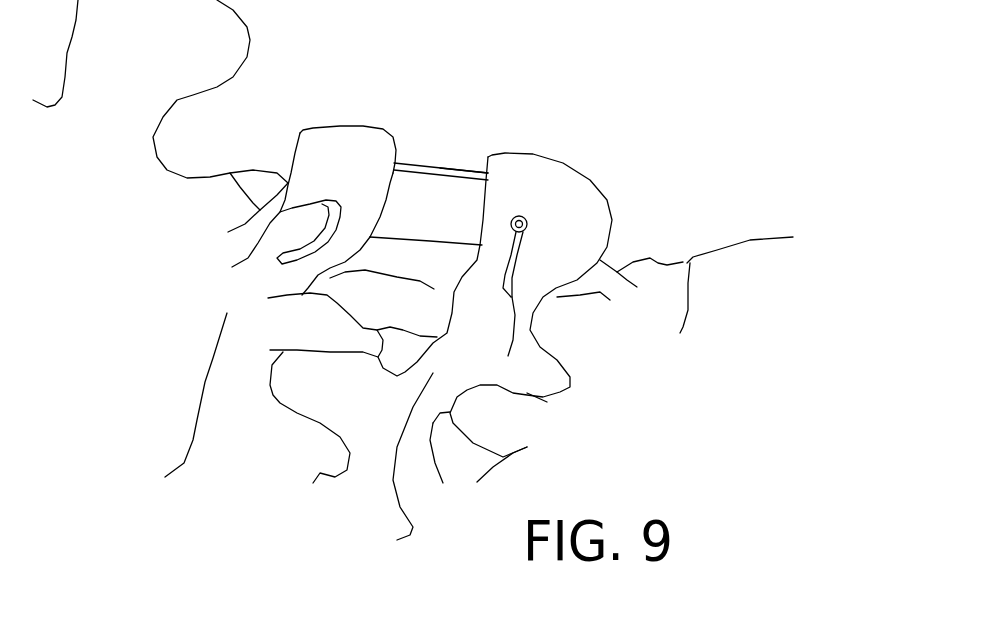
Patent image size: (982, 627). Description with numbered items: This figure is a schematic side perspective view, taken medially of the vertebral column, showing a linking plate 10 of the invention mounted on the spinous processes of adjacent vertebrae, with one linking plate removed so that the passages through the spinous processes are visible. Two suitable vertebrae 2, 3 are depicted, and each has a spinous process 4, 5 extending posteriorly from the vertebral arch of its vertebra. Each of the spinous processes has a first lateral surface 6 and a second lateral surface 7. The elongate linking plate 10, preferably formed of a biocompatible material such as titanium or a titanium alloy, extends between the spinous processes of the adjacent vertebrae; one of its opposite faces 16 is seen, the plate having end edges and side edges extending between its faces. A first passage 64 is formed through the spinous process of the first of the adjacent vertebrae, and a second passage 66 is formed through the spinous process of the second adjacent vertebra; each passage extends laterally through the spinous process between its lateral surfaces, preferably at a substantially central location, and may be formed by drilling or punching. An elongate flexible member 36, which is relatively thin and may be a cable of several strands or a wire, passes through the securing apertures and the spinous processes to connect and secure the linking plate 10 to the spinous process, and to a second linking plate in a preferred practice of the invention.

The vertebra 2 is at (165, 477).
The vertebra 3 is at (397, 540).
The spinous process 4 is at (343, 143).
The spinous process 5 is at (527, 217).
The first lateral surface 6 is at (302, 131).
The second lateral surface 7 is at (379, 153).
The linking plate 10 is at (444, 184).
The face 16 is at (443, 174).
The elongate flexible member 36 is at (507, 360).
The first passage 64 is at (232, 267).
The second passage 66 is at (575, 173).